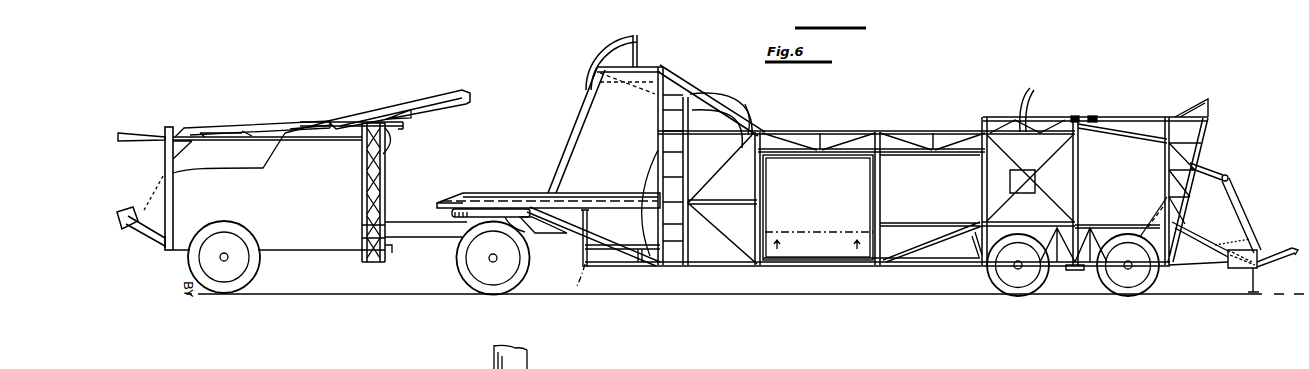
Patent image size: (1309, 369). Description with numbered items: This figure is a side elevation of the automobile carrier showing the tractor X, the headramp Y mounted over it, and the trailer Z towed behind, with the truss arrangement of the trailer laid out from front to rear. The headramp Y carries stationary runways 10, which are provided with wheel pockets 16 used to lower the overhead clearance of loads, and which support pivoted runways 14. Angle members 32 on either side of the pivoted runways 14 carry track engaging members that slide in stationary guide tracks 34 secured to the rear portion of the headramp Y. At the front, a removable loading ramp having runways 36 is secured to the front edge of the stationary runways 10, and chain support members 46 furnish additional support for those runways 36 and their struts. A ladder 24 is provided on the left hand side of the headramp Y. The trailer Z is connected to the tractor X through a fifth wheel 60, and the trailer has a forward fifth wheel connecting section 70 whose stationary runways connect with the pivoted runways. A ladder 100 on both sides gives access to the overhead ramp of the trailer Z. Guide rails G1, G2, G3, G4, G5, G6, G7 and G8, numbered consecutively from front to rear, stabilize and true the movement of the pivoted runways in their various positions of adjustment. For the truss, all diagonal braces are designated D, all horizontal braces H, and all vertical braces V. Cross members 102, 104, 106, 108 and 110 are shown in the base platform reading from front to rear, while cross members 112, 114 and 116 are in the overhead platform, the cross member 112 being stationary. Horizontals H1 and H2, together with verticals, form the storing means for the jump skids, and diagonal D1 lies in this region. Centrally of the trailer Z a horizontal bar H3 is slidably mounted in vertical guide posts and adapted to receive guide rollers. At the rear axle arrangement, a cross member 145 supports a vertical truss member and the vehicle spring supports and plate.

The runways of removable loading ramp 36 is at (146, 124).
The headramp Y is at (215, 122).
The stationary runways 10 is at (291, 128).
The pivoted runways 14 is at (433, 96).
The angle members 32 is at (407, 114).
The guide tracks 34 is at (392, 147).
The wheel pockets 16 is at (233, 135).
The chain support members 46 is at (158, 186).
The tractor X is at (311, 198).
The ladder 24 is at (386, 250).
The forward fifth wheel connecting section 70 is at (506, 188).
The fifth wheel 60 is at (517, 236).
The horizontal brace H1 is at (584, 247).
The horizontal brace H2 is at (622, 265).
The diagonal brace D1 is at (641, 266).
The cross member 102 is at (572, 289).
The cross member 112 is at (655, 92).
The guide rail G1 is at (593, 62).
The cross member 104 is at (664, 267).
The guide rail G2 is at (652, 222).
The ladder 100 is at (708, 113).
The guide rail G3 is at (750, 103).
The cross member 106 is at (758, 266).
The horizontal braces H is at (800, 155).
The diagonal braces D is at (821, 146).
The horizontal bar H3 is at (814, 258).
The trailer Z is at (846, 273).
The cross member 108 is at (983, 267).
The guide rail G4 is at (980, 253).
The guide rail G5 is at (995, 228).
The cross member 145 is at (1078, 270).
The vertical braces V is at (984, 183).
The cross member 114 is at (1073, 117).
The cross member 116 is at (1092, 116).
The guide rail G6 is at (1020, 105).
The guide rail G8 is at (1195, 90).
The cross member 110 is at (1170, 266).
The guide rail G7 is at (1192, 240).